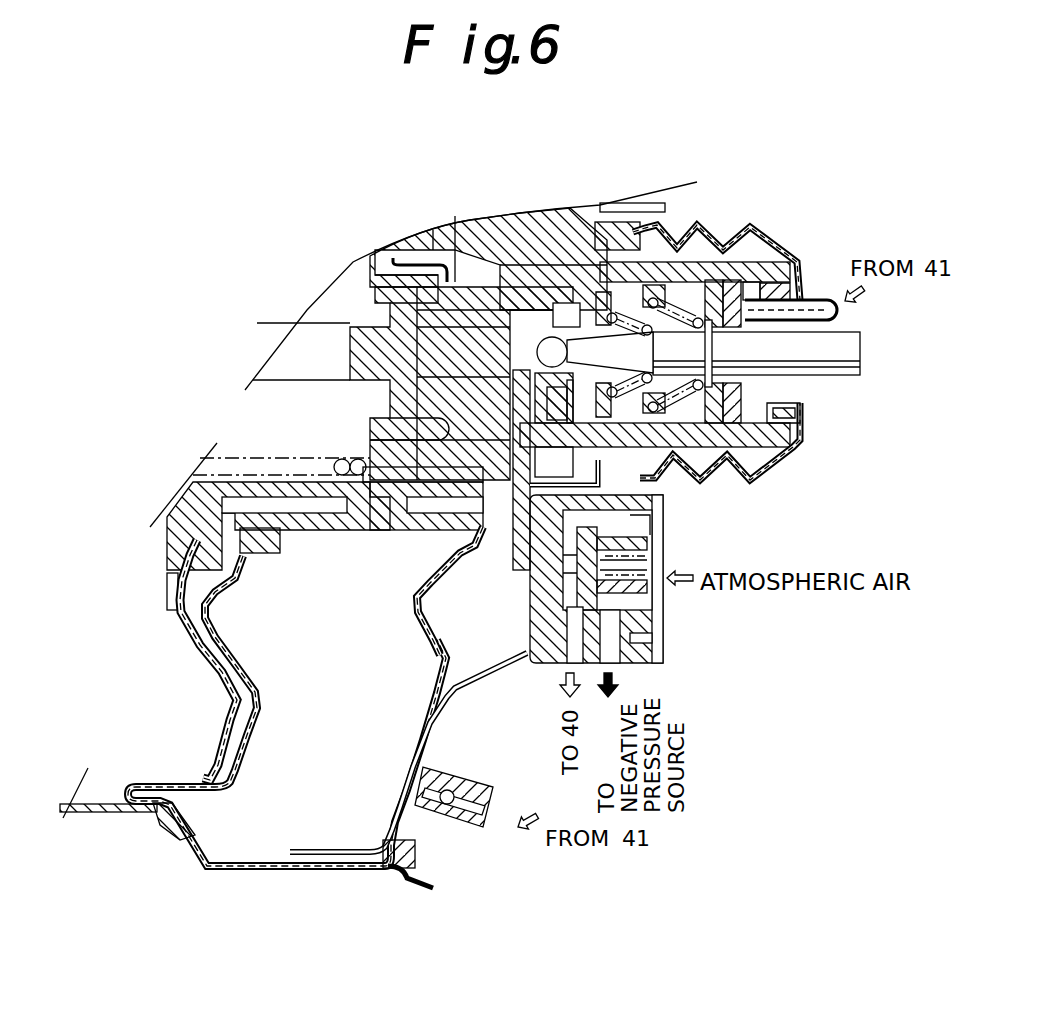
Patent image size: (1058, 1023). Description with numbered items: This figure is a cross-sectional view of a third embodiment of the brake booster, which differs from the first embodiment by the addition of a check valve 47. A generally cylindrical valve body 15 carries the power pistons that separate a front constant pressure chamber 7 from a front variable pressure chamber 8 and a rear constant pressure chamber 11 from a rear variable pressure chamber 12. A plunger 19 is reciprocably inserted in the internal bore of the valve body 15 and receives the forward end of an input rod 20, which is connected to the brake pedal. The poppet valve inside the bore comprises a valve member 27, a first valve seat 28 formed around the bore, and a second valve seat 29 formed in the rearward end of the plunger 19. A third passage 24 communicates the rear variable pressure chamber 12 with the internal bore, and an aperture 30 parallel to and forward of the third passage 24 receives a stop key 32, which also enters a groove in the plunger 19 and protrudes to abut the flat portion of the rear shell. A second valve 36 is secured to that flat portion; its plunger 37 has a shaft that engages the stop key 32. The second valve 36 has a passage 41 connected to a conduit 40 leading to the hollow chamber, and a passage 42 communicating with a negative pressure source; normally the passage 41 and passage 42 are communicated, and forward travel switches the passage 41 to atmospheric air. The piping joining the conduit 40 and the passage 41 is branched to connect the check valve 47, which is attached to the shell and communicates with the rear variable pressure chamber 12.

The front constant pressure chamber 7 is at (117, 767).
The front variable pressure chamber 8 is at (200, 793).
The rear constant pressure chamber 11 is at (413, 693).
The rear variable pressure chamber 12 is at (467, 660).
The valve body 15 is at (718, 270).
The plunger 19 is at (447, 333).
The input rod 20 is at (840, 357).
The third passage 24 is at (505, 505).
The valve member 27 is at (610, 297).
The first valve seat 28 is at (607, 293).
The second valve seat 29 is at (588, 297).
The aperture 30 is at (413, 527).
The stop key 32 is at (522, 568).
The second valve 36 is at (632, 597).
The plunger 37 is at (540, 663).
The conduit 40 is at (817, 300).
The passage 41 is at (580, 663).
The passage 42 is at (620, 668).
The check valve 47 is at (477, 823).